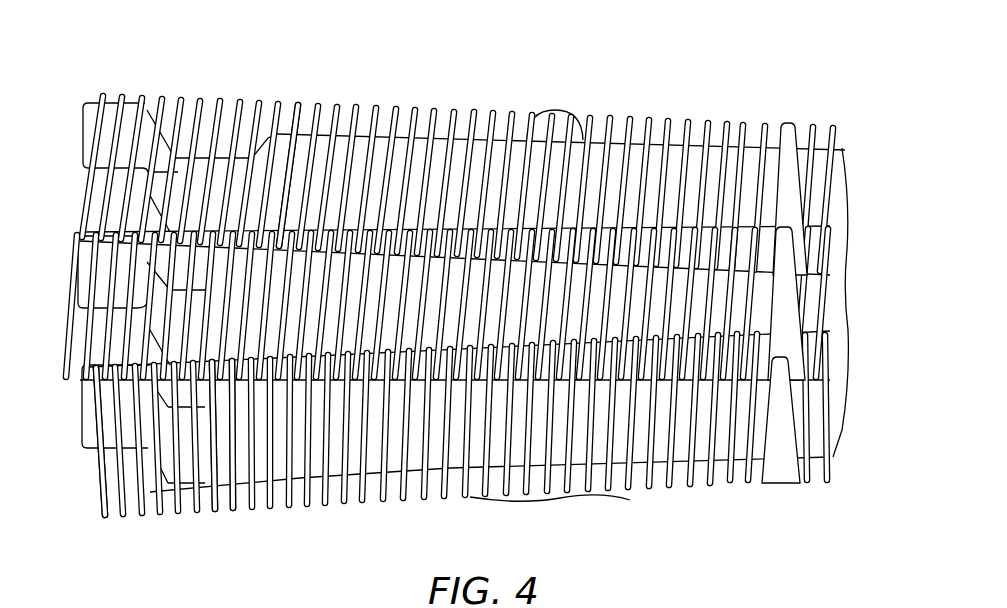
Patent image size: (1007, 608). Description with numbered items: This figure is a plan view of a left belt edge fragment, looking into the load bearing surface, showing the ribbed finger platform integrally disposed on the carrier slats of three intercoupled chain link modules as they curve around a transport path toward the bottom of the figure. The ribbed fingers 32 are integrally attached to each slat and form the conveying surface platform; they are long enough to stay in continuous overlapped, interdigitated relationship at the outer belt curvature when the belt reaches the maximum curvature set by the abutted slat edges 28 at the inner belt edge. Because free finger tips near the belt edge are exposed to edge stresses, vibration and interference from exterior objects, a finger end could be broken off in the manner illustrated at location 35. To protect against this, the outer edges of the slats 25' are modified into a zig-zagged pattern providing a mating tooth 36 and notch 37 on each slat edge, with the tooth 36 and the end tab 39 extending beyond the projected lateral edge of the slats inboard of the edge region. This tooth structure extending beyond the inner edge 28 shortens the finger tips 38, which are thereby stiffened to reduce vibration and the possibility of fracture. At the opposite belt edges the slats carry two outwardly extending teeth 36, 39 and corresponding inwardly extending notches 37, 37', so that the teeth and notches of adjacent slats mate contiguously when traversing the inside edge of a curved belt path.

The end tab 39 is at (132, 112).
The ribbed fingers 32 is at (297, 102).
The slat edge 28 is at (387, 103).
The slat 25' is at (825, 298).
The notch 37' is at (77, 292).
The finger tip 38 is at (125, 380).
The rib finger end location 35 is at (93, 450).
The tooth 36 is at (218, 503).
The notch 37 is at (251, 473).